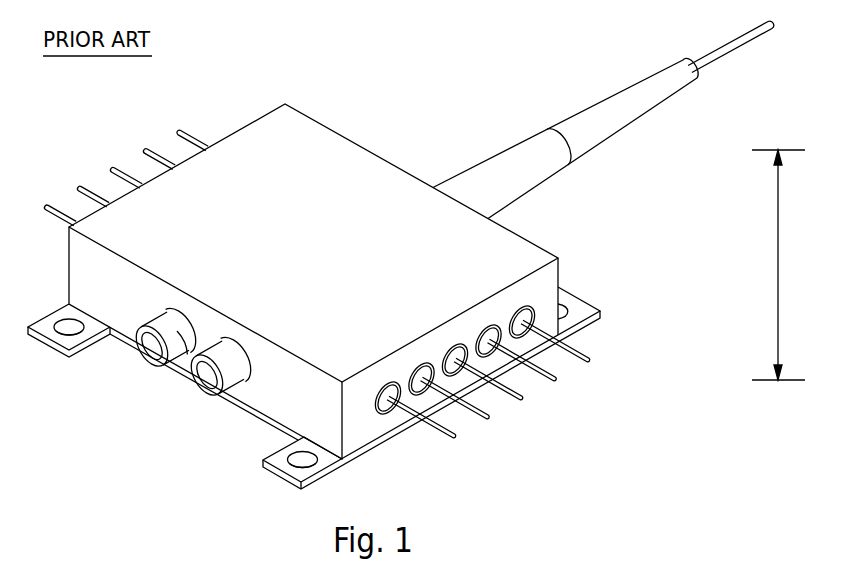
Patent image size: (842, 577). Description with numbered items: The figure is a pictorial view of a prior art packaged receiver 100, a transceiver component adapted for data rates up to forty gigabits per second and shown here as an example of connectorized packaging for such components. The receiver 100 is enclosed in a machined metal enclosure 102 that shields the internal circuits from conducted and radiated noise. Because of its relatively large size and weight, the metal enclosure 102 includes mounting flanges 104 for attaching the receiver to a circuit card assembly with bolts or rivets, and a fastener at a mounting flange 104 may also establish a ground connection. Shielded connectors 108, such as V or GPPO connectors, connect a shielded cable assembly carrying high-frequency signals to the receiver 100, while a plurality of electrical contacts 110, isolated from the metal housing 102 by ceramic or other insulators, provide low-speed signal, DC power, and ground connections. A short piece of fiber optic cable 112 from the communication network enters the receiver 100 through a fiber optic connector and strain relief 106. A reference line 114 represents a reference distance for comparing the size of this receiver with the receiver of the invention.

The 40 G receiver 100 is at (376, 65).
The metal enclosure 102 is at (556, 258).
The mounting flanges 104 is at (68, 362).
The fiber optic connector and strain relief 106 is at (525, 139).
The shielded connectors 108 is at (148, 367).
The electrical contacts 110 is at (550, 378).
The fiber optic cable 112 is at (740, 34).
The reference line 114 is at (778, 332).